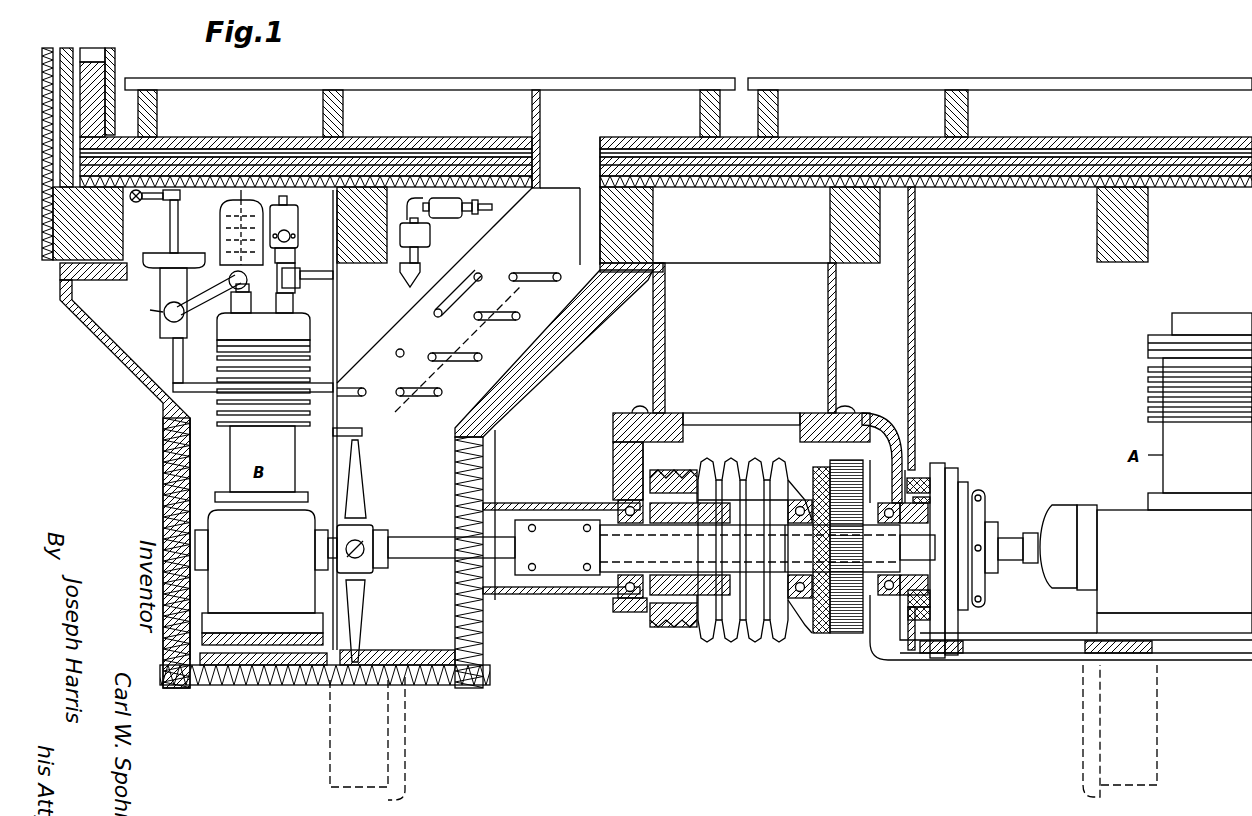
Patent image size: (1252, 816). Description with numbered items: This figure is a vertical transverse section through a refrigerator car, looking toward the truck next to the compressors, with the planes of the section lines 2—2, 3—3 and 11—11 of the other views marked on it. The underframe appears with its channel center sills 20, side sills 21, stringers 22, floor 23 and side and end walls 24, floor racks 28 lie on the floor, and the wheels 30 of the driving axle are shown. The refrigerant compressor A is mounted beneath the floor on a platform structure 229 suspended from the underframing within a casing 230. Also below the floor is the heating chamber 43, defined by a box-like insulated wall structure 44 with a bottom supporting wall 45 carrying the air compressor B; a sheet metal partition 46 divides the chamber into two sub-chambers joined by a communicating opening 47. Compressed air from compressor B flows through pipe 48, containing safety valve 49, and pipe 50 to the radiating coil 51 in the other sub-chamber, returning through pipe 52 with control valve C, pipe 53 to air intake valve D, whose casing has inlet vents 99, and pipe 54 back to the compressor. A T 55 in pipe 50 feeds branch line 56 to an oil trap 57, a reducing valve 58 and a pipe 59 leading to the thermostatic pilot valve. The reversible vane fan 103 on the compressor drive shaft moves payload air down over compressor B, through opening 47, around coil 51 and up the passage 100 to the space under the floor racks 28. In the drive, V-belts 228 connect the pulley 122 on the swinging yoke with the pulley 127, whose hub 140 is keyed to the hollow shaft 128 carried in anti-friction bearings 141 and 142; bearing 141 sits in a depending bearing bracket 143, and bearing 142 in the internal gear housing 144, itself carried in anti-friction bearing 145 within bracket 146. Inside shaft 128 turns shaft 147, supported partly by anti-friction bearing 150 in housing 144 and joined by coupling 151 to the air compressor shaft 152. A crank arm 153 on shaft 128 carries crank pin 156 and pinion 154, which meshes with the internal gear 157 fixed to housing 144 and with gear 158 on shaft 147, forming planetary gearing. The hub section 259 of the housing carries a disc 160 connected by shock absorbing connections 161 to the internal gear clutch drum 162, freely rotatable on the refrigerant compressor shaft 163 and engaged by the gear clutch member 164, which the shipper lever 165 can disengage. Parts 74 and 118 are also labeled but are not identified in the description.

The section line 2— 2 is at (572, 265).
The section line 3— 3 is at (1150, 190).
The section line 11— 11 is at (251, 300).
The channel center sills 20 is at (653, 352).
The side sills 21 is at (96, 276).
The stringers 22 is at (337, 200).
The floor 23 is at (303, 137).
The side and end walls 24 is at (62, 60).
The floor racks 28 is at (455, 68).
The wheels 30 is at (406, 770).
The heating chamber 43 is at (200, 456).
The insulated wall structure 44 is at (130, 388).
The bottom supporting wall 45 is at (278, 680).
The sheet metal partition 46 is at (338, 323).
The communicating opening 47 is at (360, 436).
The pipe 48 is at (293, 302).
The safety valve 49 is at (298, 216).
The pipe 50 is at (337, 283).
The radiating coil 51 is at (472, 312).
The pipe 52 is at (176, 382).
The pipe 53 is at (230, 285).
The pipe 54 is at (236, 298).
The T 55 is at (421, 270).
The branch line 56 is at (430, 238).
The oil trap 57 is at (445, 218).
The reducing valve 58 is at (468, 212).
The pipe 59 is at (482, 206).
The valve stem 74 is at (165, 286).
The inlet vents 99 is at (220, 230).
The passage 100 is at (582, 150).
The reversible vane fan 103 is at (358, 479).
The handle 118 is at (171, 228).
The pulley 122 is at (750, 642).
The pulley 127 is at (650, 615).
The hollow shaft 128 is at (767, 548).
The hub 140 is at (710, 525).
The anti-friction bearing 141 is at (618, 600).
The anti-friction bearing 142 is at (795, 600).
The bearing bracket 143 is at (613, 440).
The internal gear housing 144 is at (820, 635).
The anti-friction bearing 145 is at (893, 612).
The bearing bracket 146 is at (862, 438).
The shaft 147 is at (759, 548).
The anti-friction bearing 150 is at (878, 548).
The coupling 151 is at (556, 520).
The air compressor shaft 152 is at (418, 537).
The crank arm 153 is at (722, 470).
The pinion 154 is at (807, 498).
The crank pin 156 is at (884, 468).
The internal gear 157 is at (846, 635).
The gear 158 is at (803, 630).
The disc 160 is at (933, 590).
The shock absorbing connections 161 is at (921, 478).
The internal gear clutch drum 162 is at (938, 463).
The refrigerant compressor shaft 163 is at (925, 545).
The gear clutch member 164 is at (966, 490).
The shipper lever 165 is at (982, 505).
The V-belts 228 is at (680, 466).
The platform structure 229 is at (1087, 645).
The casing 230 is at (917, 372).
The hub section 259 is at (928, 568).